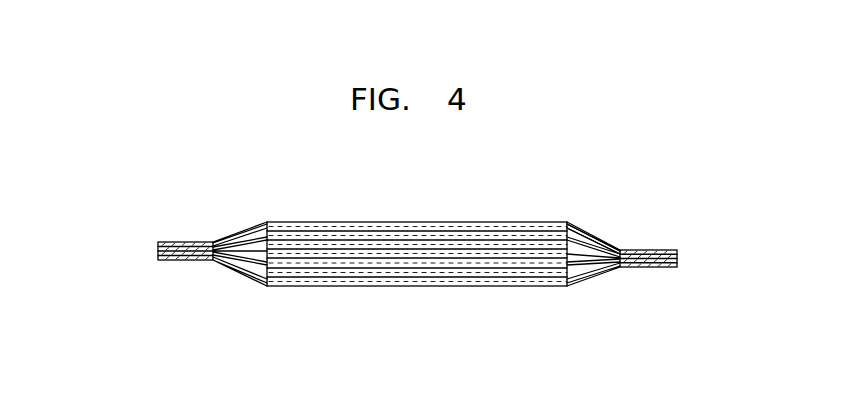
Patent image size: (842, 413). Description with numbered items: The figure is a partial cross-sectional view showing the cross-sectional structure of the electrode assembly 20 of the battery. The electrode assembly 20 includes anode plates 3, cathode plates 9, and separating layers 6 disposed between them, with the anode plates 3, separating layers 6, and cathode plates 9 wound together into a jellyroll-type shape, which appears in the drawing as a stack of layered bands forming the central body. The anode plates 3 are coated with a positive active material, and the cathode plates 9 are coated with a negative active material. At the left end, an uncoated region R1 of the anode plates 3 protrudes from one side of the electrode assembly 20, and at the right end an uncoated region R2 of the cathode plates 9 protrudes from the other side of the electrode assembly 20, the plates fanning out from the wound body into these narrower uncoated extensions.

The anode plates 3 is at (157, 251).
The separating layers 6 is at (570, 229).
The cathode plates 9 is at (677, 258).
The electrode assembly 20 is at (395, 299).
The uncoated region of the anode plates R1 is at (157, 292).
The uncoated region of the cathode plates R2 is at (565, 292).